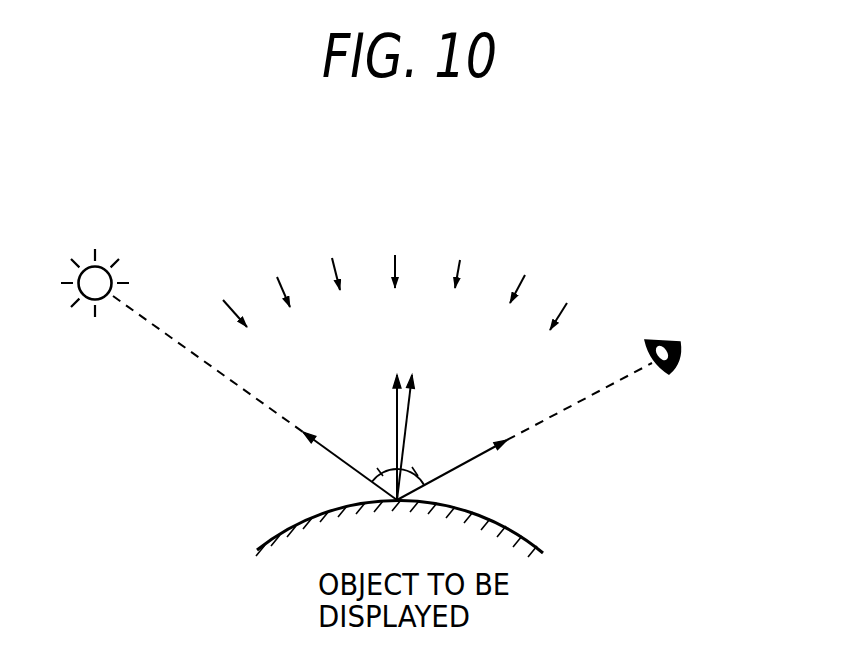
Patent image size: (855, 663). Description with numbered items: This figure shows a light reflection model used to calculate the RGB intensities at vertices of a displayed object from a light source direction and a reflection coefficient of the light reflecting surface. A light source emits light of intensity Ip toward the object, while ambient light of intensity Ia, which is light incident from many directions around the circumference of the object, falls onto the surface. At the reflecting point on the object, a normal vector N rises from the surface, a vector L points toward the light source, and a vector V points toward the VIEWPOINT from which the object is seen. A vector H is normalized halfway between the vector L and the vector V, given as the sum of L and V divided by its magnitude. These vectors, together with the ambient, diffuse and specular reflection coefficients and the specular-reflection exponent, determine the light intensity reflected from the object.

The light intensity from a light source Ip is at (97, 244).
The ambient light intensity Ia is at (395, 245).
The vector toward the light source L is at (350, 466).
The vector toward a viewpoint V is at (452, 470).
The normal vector N is at (385, 429).
The halfway vector H is at (420, 429).
The viewpoint (eye) VIEWPOINT is at (717, 333).